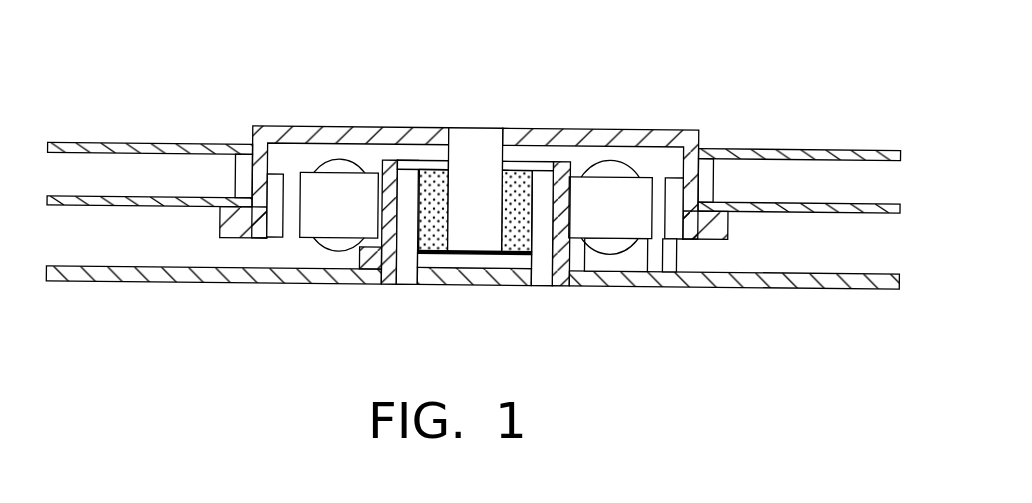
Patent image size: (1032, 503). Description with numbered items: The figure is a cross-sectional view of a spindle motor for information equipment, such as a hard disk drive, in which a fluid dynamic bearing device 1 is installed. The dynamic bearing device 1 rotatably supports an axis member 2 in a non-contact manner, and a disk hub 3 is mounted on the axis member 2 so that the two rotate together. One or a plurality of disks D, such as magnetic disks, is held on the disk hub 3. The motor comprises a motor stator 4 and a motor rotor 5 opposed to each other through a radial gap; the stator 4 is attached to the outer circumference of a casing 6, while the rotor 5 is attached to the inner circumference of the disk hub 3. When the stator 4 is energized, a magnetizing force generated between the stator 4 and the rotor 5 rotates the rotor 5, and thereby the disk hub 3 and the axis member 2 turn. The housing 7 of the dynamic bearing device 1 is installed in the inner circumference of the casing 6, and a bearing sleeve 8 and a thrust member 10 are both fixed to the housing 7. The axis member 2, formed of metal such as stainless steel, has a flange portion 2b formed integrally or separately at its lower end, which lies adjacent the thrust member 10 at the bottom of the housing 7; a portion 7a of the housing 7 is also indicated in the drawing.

The dynamic bearing device 1 is at (480, 196).
The axis member 2 is at (477, 195).
The flange portion 2b is at (444, 263).
The disk hub 3 is at (677, 133).
The motor stator 4 is at (641, 230).
The motor rotor 5 is at (671, 240).
The casing 6 is at (572, 280).
The housing 7 is at (474, 173).
The flange of bearing sleeve 7a is at (429, 168).
The bearing sleeve 8 is at (517, 170).
The thrust member 10 is at (502, 263).
The disk D is at (821, 147).